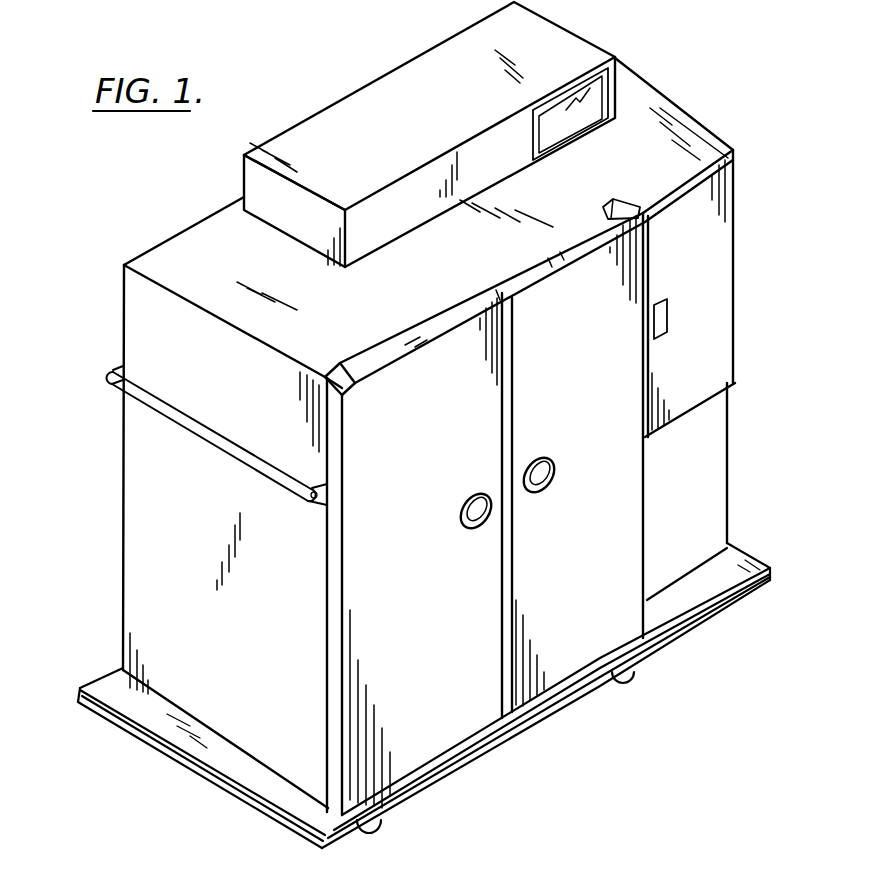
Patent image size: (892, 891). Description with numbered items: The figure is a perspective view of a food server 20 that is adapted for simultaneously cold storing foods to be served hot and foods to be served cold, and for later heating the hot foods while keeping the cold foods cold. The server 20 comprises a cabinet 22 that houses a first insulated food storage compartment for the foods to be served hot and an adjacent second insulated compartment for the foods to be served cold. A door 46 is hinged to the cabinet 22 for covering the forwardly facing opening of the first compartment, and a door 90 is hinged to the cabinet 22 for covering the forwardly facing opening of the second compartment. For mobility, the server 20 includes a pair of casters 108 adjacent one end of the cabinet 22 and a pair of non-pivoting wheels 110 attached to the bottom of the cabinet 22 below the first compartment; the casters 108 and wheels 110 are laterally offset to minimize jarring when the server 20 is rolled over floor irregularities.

The food server 20 is at (134, 224).
The cabinet 22 is at (699, 124).
The door 46 is at (570, 657).
The door 90 is at (467, 722).
The casters 108 is at (368, 832).
The non-pivoting wheels 110 is at (625, 682).